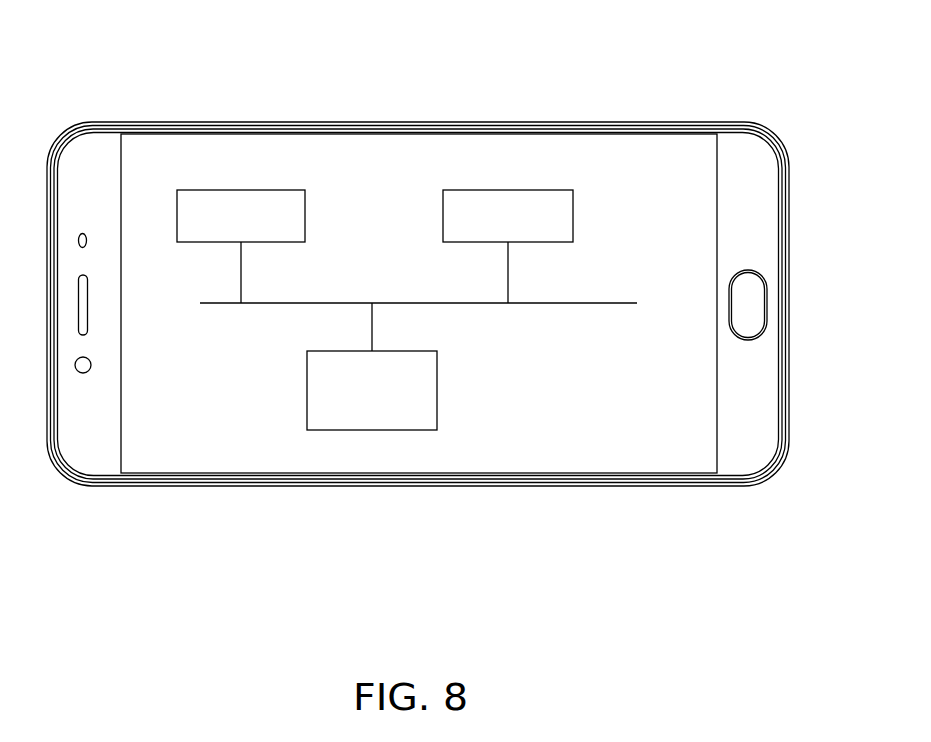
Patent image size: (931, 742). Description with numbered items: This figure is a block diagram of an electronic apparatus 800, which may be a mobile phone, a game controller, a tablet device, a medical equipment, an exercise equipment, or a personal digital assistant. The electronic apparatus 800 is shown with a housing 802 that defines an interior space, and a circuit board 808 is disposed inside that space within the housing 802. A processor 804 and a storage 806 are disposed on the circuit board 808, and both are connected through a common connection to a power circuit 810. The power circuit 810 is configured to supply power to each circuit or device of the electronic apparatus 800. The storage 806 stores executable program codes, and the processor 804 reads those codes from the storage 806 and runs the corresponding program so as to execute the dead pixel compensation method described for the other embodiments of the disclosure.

The electronic apparatus 800 is at (110, 41).
The housing 802 is at (252, 125).
The processor 804 is at (238, 190).
The storage 806 is at (513, 190).
The circuit board 808 is at (713, 176).
The power circuit 810 is at (367, 430).